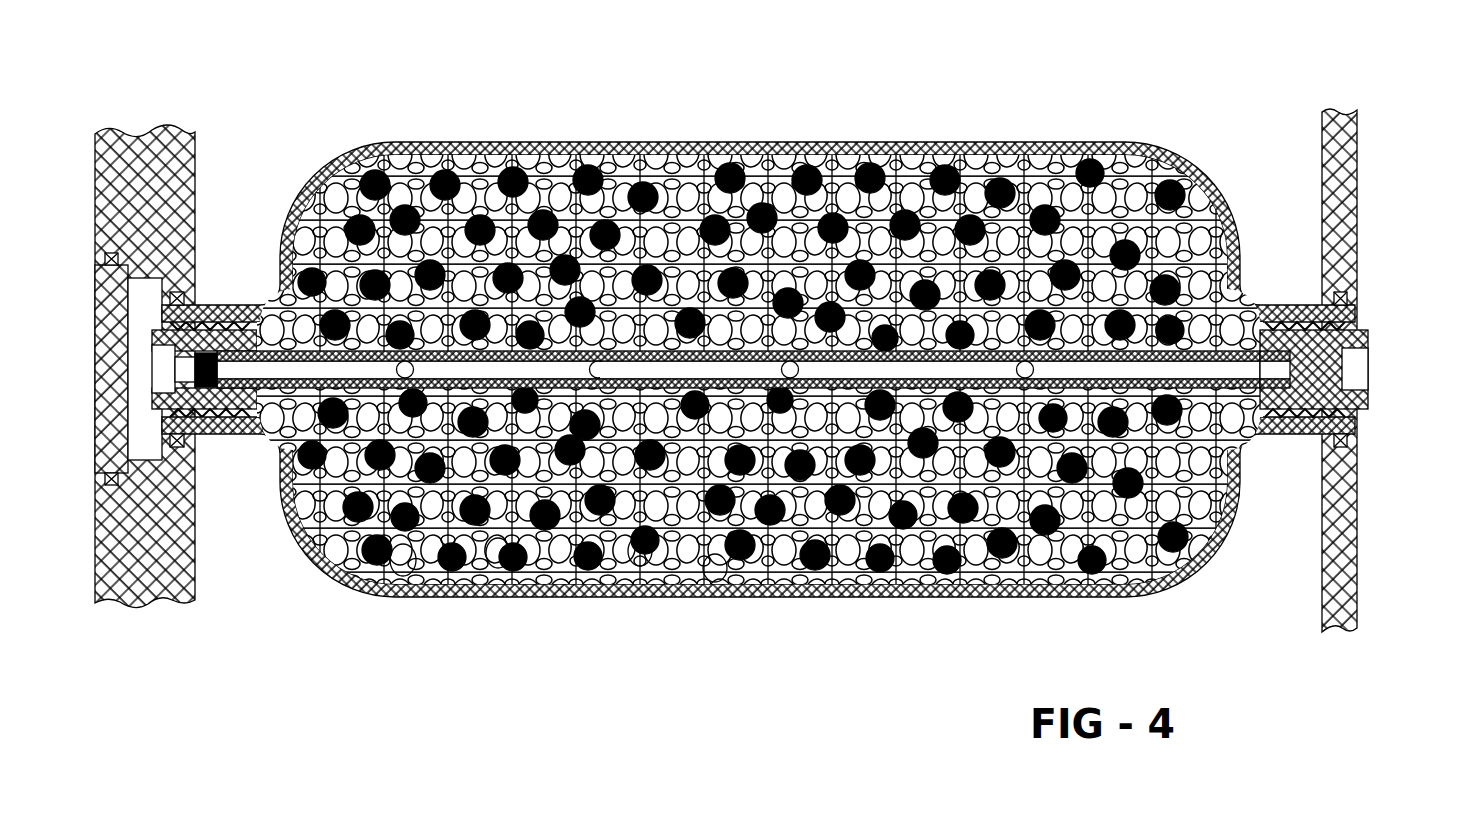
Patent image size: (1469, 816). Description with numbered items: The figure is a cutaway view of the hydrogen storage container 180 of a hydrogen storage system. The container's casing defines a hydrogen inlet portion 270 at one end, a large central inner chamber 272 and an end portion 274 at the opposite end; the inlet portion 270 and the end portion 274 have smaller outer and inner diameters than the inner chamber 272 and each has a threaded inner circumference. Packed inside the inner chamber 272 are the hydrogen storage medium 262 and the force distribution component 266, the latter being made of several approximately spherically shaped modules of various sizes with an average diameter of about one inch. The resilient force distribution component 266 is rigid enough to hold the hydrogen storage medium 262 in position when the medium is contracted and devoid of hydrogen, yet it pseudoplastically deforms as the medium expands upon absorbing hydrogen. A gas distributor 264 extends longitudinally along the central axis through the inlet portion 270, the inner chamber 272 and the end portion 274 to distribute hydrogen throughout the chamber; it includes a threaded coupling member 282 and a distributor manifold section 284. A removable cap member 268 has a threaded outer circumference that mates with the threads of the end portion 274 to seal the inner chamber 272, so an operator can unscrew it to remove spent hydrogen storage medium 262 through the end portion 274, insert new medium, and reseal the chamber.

The hydrogen storage container 180 is at (277, 188).
The hydrogen storage medium 262 is at (1173, 462).
The gas distributor 264 is at (256, 376).
The force distribution component 266 is at (405, 532).
The removable cap member 268 is at (1345, 373).
The hydrogen inlet portion 270 is at (280, 300).
The inner chamber 272 is at (1238, 100).
The end portion 274 is at (1352, 290).
The threaded coupling member 282 is at (213, 434).
The distributor manifold section 284 is at (657, 368).